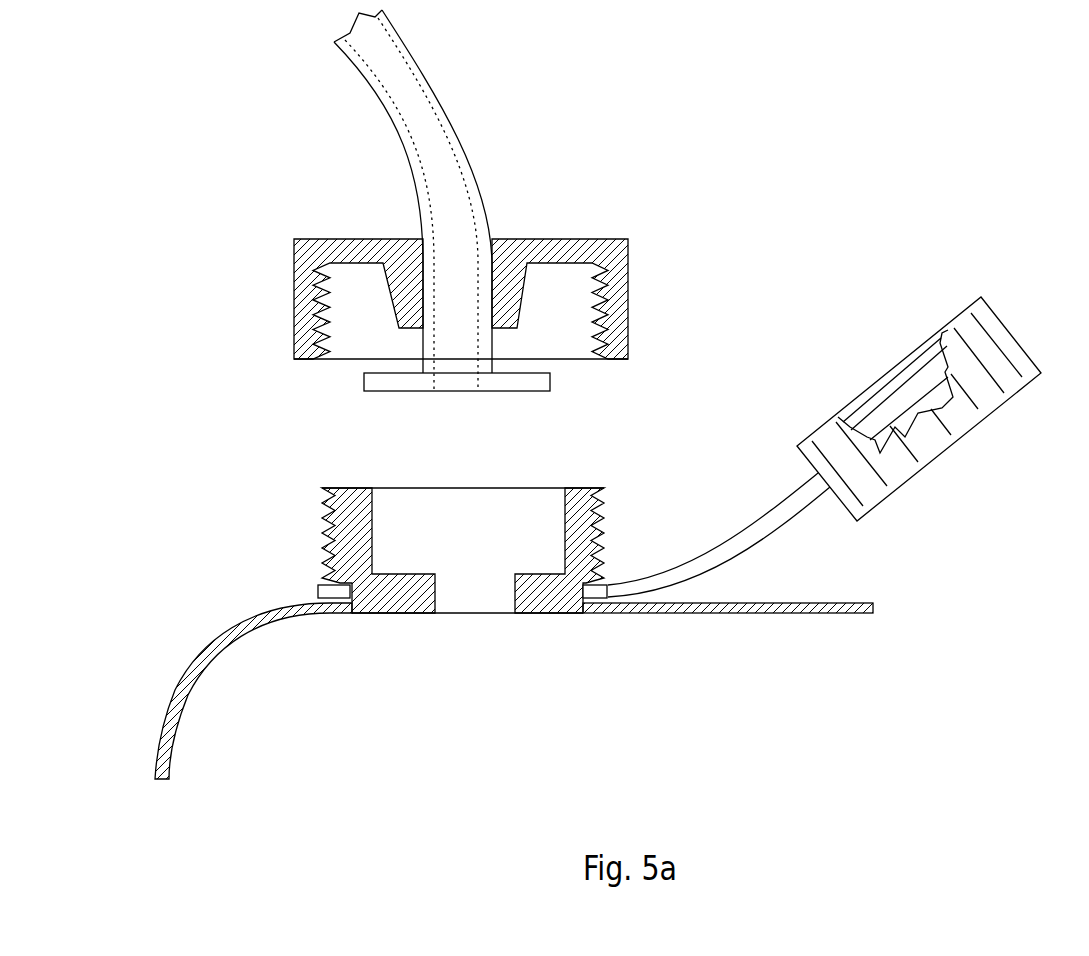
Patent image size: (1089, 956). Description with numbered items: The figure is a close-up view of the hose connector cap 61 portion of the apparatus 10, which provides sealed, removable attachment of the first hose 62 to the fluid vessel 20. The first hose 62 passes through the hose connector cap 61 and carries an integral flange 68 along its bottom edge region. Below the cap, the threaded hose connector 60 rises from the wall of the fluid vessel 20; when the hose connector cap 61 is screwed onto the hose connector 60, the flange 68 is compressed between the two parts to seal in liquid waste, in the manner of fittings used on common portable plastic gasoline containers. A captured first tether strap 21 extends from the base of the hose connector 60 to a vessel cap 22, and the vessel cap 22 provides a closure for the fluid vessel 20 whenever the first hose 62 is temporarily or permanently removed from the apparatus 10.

The apparatus 10 is at (892, 168).
The fluid vessel 20 is at (163, 700).
The captured first tether strap 21 is at (788, 532).
The vessel cap 22 is at (970, 432).
The threaded hose connector 60 is at (355, 543).
The hose connector cap 61 is at (628, 302).
The first hose 62 is at (462, 133).
The flange 68 is at (550, 382).